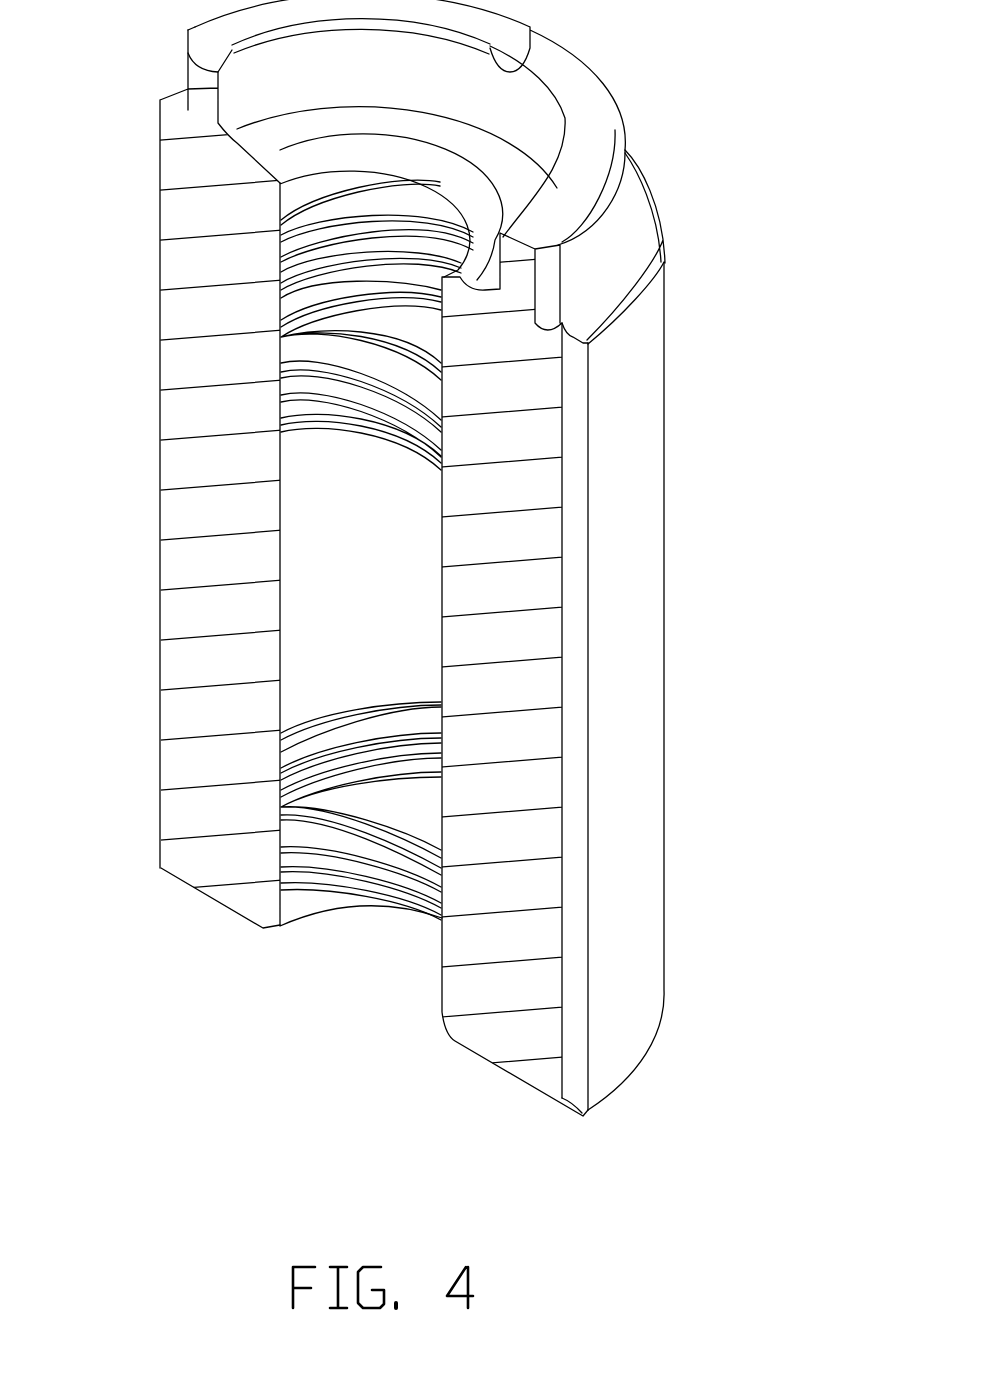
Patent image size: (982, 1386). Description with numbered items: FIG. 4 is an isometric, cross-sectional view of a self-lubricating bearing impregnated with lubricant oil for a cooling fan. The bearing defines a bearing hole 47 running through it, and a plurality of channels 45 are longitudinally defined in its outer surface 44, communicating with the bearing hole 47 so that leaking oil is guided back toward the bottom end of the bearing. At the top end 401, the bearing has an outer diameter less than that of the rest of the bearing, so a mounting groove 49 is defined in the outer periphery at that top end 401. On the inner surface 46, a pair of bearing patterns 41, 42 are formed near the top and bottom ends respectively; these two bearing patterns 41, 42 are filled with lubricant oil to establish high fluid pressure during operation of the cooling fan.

The top end 401 is at (597, 130).
The mounting groove 49 is at (645, 220).
The outer surface 44 is at (638, 515).
The channels 45 is at (573, 693).
The inner surface 46 is at (315, 587).
The bearing pattern 41 is at (280, 362).
The bearing pattern 42 is at (286, 799).
The bearing hole 47 is at (351, 955).